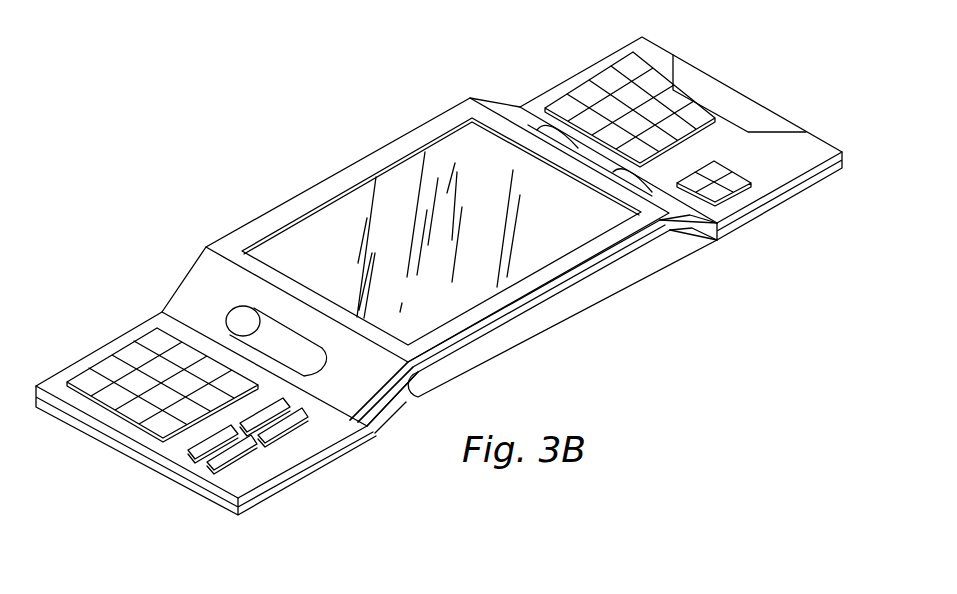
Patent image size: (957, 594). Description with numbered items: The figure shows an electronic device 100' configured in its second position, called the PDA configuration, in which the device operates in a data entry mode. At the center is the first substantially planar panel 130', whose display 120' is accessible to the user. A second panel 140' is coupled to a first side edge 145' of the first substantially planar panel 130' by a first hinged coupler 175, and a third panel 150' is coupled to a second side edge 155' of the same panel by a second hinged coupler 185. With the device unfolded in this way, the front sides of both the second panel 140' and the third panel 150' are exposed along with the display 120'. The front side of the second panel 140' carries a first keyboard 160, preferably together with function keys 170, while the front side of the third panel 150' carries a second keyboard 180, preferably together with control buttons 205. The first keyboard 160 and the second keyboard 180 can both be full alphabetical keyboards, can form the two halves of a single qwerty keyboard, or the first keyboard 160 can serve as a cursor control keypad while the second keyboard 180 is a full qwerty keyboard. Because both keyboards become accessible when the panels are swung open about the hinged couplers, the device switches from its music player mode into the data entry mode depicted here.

The electronic device 100' is at (415, 225).
The display 120' is at (441, 212).
The first substantially planar panel 130' is at (533, 324).
The second panel 140' is at (202, 407).
The first side edge 145' is at (397, 426).
The third panel 150' is at (681, 125).
The second side edge 155' is at (697, 259).
The first keyboard 160 is at (135, 398).
The function keys 170 is at (200, 453).
The first hinged coupler 175 is at (278, 332).
The second keyboard 180 is at (603, 108).
The second hinged coupler 185 is at (528, 105).
The control buttons 205 is at (722, 202).